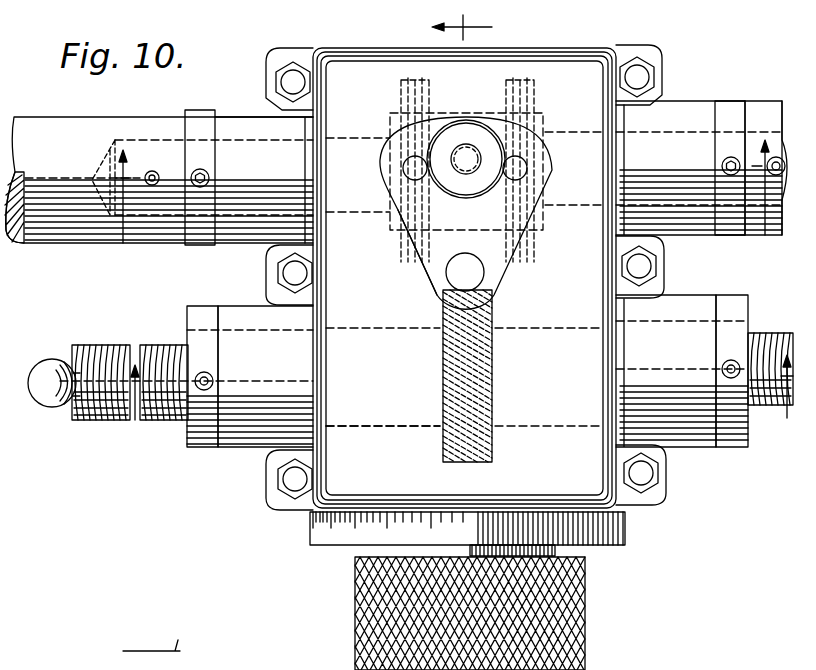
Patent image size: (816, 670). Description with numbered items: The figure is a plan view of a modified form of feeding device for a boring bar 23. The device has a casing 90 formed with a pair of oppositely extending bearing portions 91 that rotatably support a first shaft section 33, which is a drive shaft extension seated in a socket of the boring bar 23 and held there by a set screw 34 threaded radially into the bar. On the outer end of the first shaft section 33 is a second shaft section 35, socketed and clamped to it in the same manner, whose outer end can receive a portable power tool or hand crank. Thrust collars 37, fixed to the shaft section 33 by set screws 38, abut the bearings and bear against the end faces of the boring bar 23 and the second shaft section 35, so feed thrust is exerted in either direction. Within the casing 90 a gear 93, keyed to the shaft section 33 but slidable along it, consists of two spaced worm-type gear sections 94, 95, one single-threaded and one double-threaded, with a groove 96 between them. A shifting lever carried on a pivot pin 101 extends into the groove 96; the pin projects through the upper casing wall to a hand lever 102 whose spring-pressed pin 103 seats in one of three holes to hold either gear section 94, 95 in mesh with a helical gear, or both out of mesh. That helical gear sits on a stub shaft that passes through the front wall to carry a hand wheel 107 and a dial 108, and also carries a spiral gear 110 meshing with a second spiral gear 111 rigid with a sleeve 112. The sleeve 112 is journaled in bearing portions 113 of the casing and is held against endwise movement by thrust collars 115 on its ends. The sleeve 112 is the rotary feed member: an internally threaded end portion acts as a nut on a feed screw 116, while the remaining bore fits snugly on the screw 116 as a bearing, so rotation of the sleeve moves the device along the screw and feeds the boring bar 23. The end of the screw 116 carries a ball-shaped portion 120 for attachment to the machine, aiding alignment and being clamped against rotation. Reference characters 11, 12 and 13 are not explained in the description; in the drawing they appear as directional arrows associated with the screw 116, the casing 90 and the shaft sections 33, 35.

The worm shaft axis direction arrow 11 is at (456, 390).
The direction arrow 12 is at (481, 27).
The arm axis direction arrow 13 is at (123, 243).
The boring bar 23 is at (50, 236).
The first shaft section 33 is at (236, 145).
The set screw 34 is at (155, 170).
The second shaft section 35 is at (758, 108).
The thrust collars 37 is at (196, 117).
The set screws 38 is at (200, 187).
The casing 90 is at (565, 55).
The bearing portions 91 is at (250, 118).
The gear 93 is at (395, 104).
The gear section 94 is at (532, 108).
The gear section 95 is at (416, 95).
The groove 96 is at (480, 118).
The pivot pin 101 is at (478, 270).
The hand lever 102 is at (440, 263).
The spring-pressed pin 103 is at (470, 162).
The hand wheel 107 is at (560, 607).
The dial 108 is at (612, 526).
The spiral gear 110 is at (209, 375).
The second spiral gear 111 is at (494, 450).
The sleeve 112 is at (392, 432).
The bearing portions 113 is at (248, 447).
The thrust collars 115 is at (200, 447).
The screw 116 is at (102, 420).
The ball-shaped portion 120 is at (40, 400).